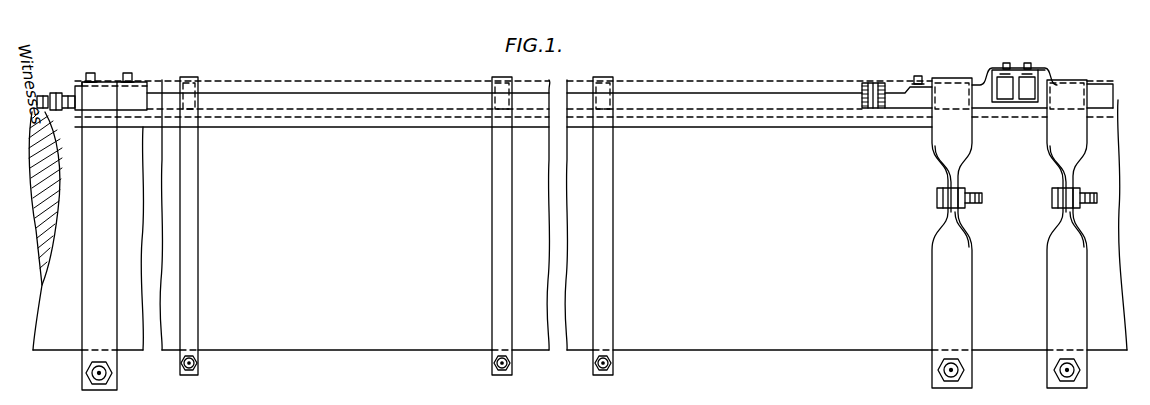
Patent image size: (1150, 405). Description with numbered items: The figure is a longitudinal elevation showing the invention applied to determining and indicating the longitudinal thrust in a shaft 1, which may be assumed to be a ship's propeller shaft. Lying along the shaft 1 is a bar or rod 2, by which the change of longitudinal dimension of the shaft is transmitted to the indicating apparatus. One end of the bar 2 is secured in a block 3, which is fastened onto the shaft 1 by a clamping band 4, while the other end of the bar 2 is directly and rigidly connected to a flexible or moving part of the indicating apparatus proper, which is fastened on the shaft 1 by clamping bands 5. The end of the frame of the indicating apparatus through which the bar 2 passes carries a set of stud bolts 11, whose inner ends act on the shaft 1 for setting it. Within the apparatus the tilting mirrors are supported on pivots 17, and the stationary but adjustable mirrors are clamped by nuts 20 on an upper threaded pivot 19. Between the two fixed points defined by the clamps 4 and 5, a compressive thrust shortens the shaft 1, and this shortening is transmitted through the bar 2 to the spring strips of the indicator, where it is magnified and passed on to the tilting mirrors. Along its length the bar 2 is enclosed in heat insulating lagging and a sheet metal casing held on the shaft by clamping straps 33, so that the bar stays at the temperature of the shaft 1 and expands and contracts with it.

The shaft 1 is at (578, 215).
The bar or rod 2 is at (297, 108).
The block 3 is at (128, 92).
The clamping band 4 is at (88, 268).
The clamping bands 5 is at (1062, 274).
The stud bolts 11 is at (919, 75).
The pivots 17 is at (1000, 73).
The upper threaded pivot 19 is at (1036, 71).
The nuts 20 is at (1027, 65).
The clamping straps 33 is at (190, 243).